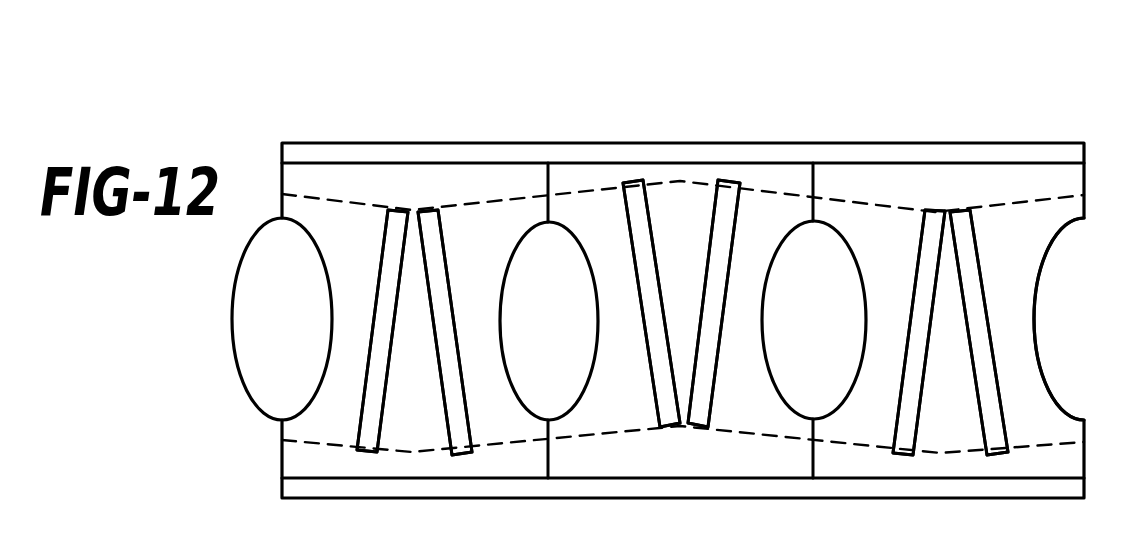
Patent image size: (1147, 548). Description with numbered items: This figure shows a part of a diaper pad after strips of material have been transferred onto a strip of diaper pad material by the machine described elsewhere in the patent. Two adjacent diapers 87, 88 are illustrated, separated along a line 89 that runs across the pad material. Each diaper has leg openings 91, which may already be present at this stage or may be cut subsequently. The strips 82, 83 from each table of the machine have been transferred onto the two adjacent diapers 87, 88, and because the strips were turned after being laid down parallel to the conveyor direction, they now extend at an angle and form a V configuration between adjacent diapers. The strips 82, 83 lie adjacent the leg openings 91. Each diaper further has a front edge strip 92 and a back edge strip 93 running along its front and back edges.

The strip 82 is at (455, 382).
The strip 83 is at (364, 402).
The diaper 87 is at (428, 198).
The diaper 88 is at (702, 200).
The line 89 is at (560, 164).
The leg opening 91 is at (331, 330).
The front edge strip 92 is at (690, 153).
The back edge strip 93 is at (418, 153).